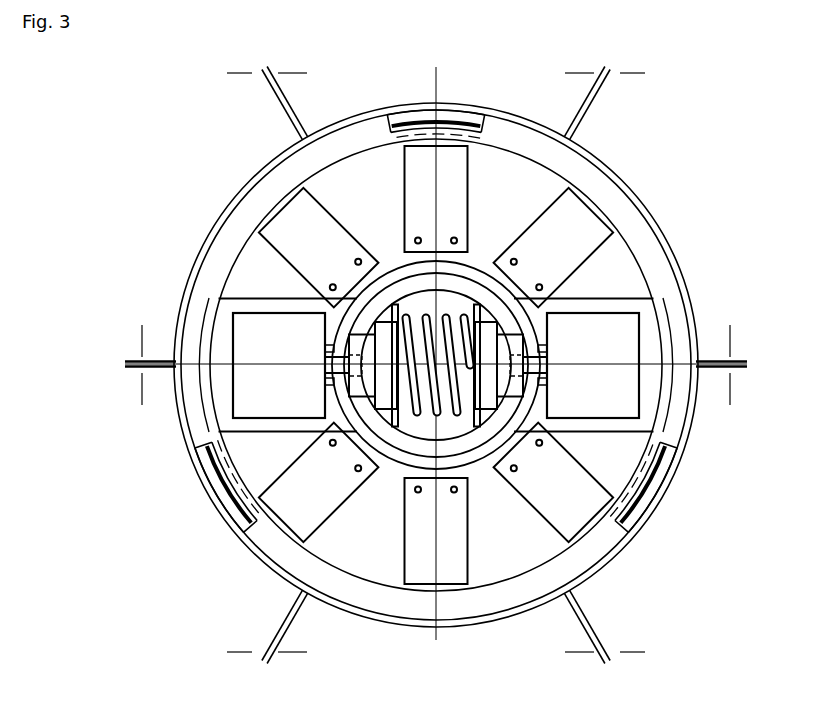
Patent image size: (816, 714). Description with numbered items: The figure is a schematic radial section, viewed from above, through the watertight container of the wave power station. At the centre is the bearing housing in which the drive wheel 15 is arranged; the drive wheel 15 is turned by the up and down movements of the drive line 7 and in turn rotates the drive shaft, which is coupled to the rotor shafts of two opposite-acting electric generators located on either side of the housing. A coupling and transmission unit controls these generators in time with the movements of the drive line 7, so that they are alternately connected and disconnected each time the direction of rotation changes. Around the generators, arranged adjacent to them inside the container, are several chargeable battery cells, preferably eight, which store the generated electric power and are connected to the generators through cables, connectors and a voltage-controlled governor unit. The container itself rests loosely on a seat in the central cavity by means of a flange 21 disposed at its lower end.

The drive line 7 is at (438, 314).
The drive wheel 15 is at (404, 312).
The flange 21 is at (638, 232).